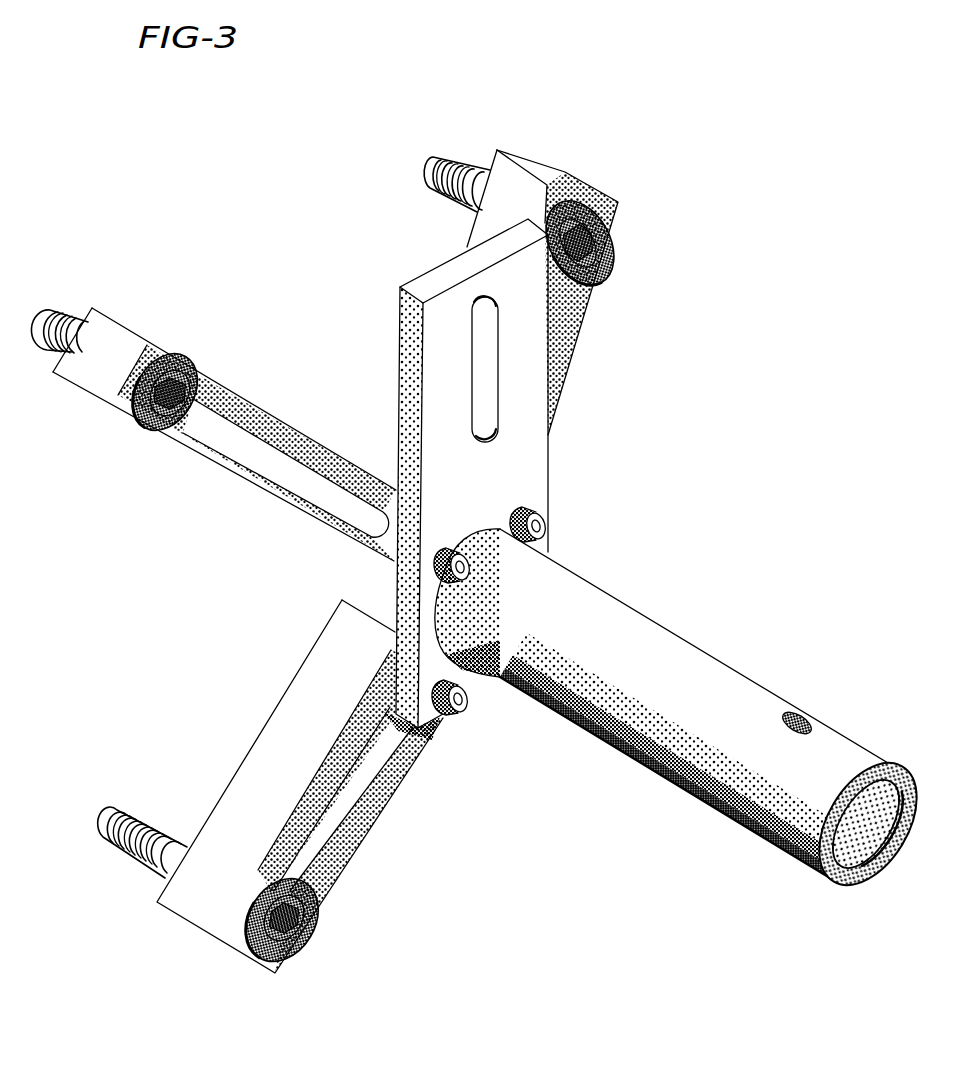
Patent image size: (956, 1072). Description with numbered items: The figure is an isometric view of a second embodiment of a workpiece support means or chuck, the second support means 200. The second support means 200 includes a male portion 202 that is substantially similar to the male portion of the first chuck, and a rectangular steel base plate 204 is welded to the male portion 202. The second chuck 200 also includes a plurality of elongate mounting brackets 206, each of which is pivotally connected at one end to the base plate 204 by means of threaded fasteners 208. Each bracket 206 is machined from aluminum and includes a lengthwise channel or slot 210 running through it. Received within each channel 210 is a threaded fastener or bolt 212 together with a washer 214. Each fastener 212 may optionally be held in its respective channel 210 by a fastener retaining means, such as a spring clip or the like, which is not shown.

The second support means 200 is at (312, 300).
The male portion 202 is at (640, 622).
The base plate 204 is at (487, 688).
The elongate mounting brackets 206 is at (578, 352).
The threaded fasteners 208 is at (532, 518).
The channel or slot 210 is at (550, 300).
The threaded fastener or bolt 212 is at (590, 243).
The washer 214 is at (600, 212).